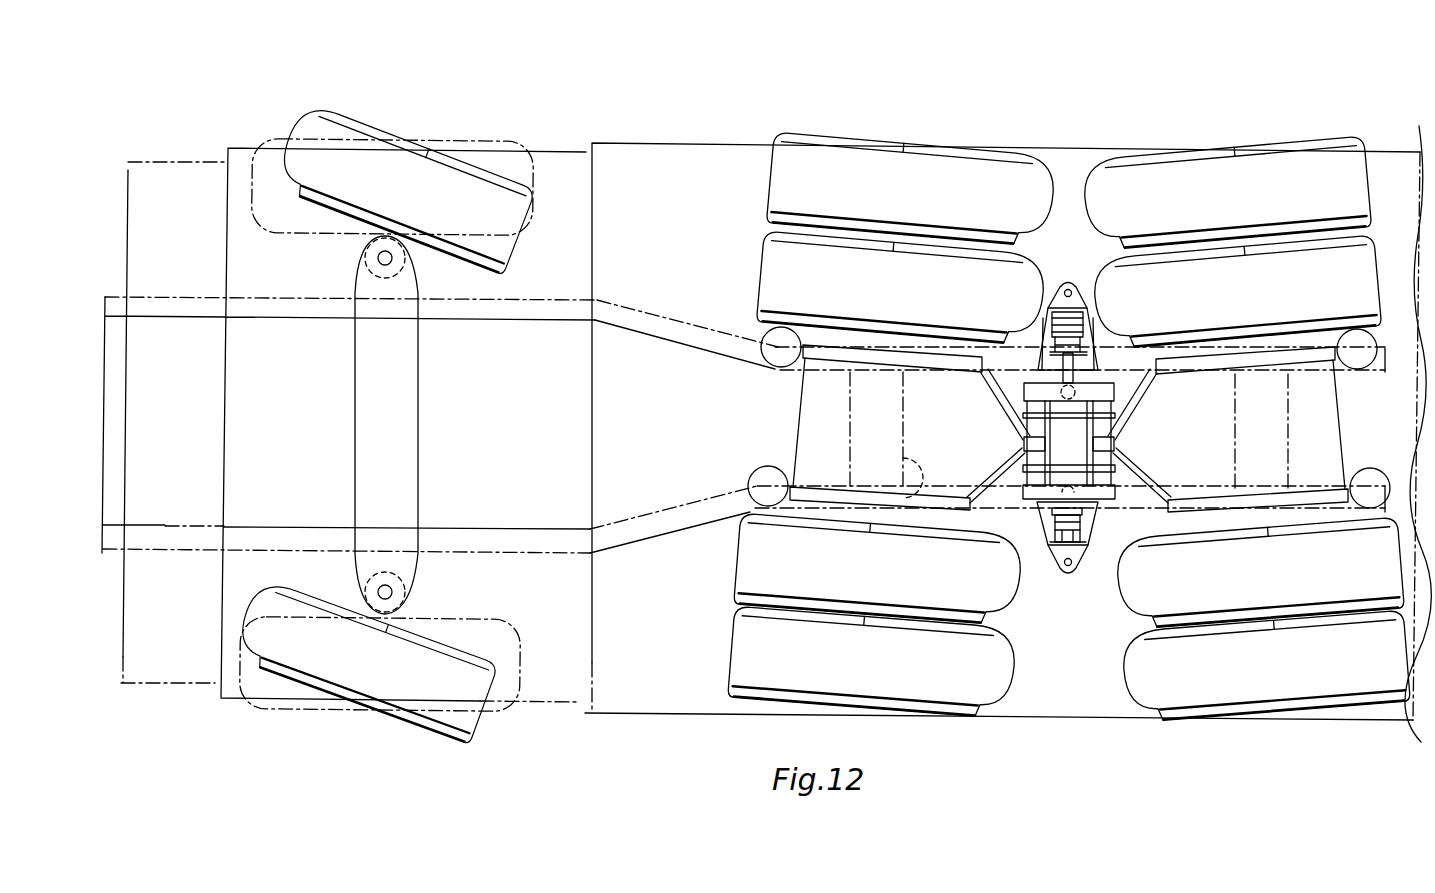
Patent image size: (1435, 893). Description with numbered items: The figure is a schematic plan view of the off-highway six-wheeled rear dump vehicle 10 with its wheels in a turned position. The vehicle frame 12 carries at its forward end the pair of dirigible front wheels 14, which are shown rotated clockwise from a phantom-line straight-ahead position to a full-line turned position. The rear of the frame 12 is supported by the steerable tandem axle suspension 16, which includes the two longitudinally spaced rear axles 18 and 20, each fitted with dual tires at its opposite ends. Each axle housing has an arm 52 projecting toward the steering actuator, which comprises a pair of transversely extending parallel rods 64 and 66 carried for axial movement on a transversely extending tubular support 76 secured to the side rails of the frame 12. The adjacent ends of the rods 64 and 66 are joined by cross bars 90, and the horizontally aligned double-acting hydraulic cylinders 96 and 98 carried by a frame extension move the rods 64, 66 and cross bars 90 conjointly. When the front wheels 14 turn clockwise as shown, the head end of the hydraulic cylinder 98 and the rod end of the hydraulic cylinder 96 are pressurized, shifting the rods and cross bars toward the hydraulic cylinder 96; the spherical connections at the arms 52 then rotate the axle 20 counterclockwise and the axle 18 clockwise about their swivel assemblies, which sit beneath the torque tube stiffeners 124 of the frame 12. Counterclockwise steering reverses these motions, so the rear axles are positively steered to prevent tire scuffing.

The off-highway six-wheeled rear dump vehicle 10 is at (708, 130).
The vehicle frame 12 is at (562, 562).
The dirigible front wheels 14 is at (367, 140).
The steerable tandem axle suspension 16 is at (1101, 463).
The rear axle 18 is at (792, 410).
The rear axle 20 is at (1350, 432).
The arm 52 is at (1025, 443).
The rod 64 is at (1027, 460).
The rod 66 is at (1115, 457).
The tubular support 76 is at (1058, 408).
The cross bar 90 is at (1117, 388).
The hydraulic cylinder 96 is at (1090, 524).
The hydraulic cylinder 98 is at (1097, 328).
The torque tube stiffener 124 is at (900, 514).